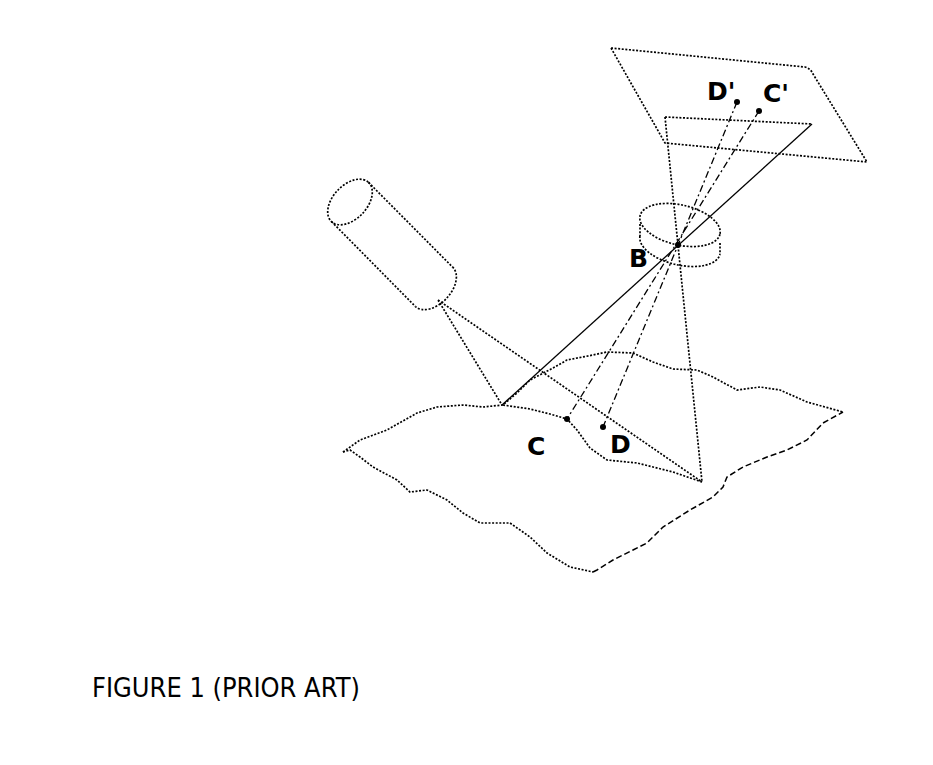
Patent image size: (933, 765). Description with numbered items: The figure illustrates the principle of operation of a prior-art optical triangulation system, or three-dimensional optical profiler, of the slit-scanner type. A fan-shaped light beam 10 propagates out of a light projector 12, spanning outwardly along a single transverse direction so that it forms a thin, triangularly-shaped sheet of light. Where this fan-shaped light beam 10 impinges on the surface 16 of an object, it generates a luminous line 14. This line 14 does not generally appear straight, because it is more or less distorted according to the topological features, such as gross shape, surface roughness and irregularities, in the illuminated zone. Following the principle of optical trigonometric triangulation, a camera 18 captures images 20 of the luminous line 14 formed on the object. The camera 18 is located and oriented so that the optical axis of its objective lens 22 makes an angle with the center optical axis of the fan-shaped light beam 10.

The fan-shaped light beam 10 is at (481, 332).
The light projector 12 is at (396, 213).
The luminous line 14 is at (597, 455).
The surface 16 is at (765, 445).
The camera 18 is at (778, 200).
The images 20 is at (715, 123).
The objective lens 22 is at (718, 228).